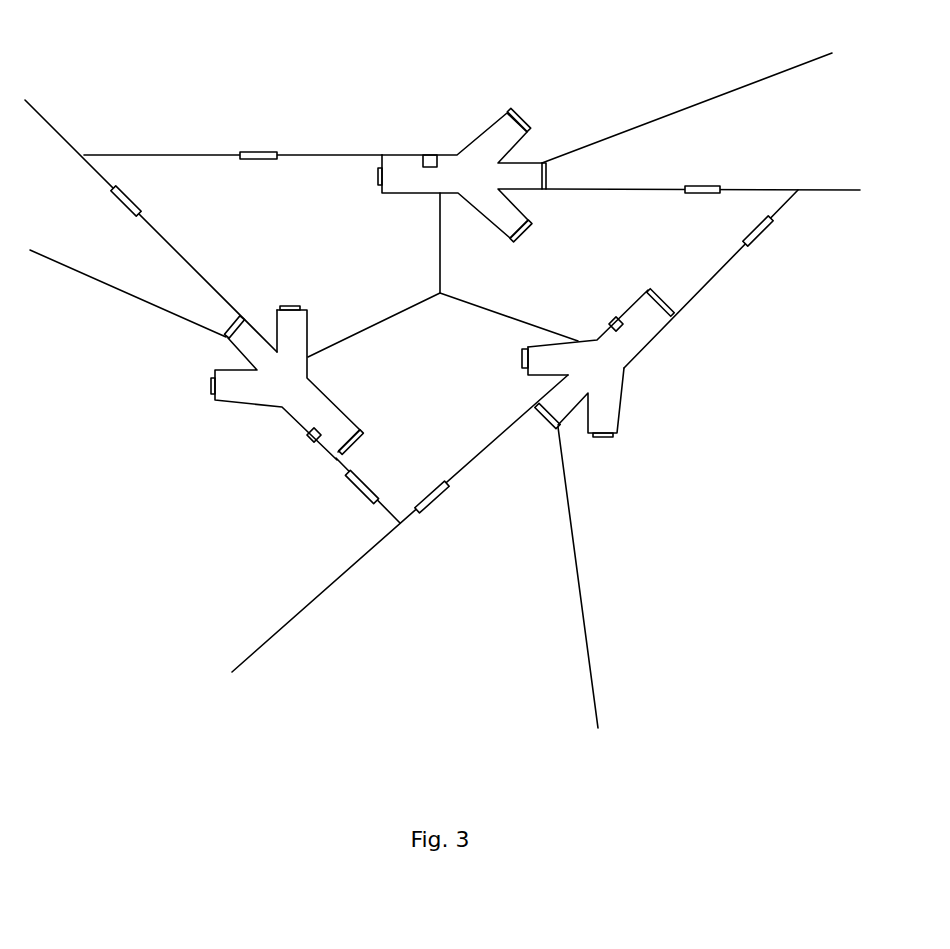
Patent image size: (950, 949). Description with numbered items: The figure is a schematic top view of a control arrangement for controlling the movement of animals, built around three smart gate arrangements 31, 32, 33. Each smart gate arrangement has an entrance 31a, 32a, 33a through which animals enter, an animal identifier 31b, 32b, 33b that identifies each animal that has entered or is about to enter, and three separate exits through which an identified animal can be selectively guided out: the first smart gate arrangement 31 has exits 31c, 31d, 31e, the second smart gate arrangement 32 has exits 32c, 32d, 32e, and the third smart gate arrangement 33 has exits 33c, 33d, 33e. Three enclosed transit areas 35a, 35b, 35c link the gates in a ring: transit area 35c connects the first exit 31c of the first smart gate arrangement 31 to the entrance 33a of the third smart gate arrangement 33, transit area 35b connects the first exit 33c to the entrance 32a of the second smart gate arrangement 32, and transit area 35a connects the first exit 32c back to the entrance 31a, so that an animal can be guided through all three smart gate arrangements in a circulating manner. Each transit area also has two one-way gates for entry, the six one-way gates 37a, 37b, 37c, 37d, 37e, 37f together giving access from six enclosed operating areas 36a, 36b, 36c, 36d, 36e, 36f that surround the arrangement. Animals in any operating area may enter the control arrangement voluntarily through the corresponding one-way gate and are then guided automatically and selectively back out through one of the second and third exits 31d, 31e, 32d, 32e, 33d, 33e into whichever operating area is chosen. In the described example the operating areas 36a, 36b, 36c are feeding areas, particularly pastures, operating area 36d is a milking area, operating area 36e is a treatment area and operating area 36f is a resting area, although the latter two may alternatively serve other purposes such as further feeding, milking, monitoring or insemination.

The smart gate arrangement 31 is at (328, 393).
The entrance 31a is at (377, 472).
The animal identifier 31b is at (312, 441).
The first exit 31c is at (288, 275).
The second exit 31d is at (233, 327).
The third exit 31e is at (210, 385).
The smart gate arrangement 32 is at (638, 357).
The entrance 32a is at (668, 294).
The animal identifier 32b is at (613, 320).
The first exit 32c is at (520, 359).
The second exit 32d is at (540, 410).
The third exit 32e is at (603, 471).
The smart gate arrangement 33 is at (398, 155).
The entrance 33a is at (374, 177).
The animal identifier 33b is at (428, 155).
The first exit 33c is at (540, 254).
The second exit 33d is at (553, 177).
The third exit 33e is at (520, 118).
The transit area 35a is at (436, 355).
The transit area 35b is at (603, 250).
The transit area 35c is at (250, 215).
The feeding area 36a is at (189, 540).
The feeding area 36b is at (730, 510).
The feeding area 36c is at (415, 22).
The milking area 36d is at (463, 617).
The treatment area 36e is at (792, 150).
The resting area 36f is at (122, 205).
The one-way gate 37a is at (373, 502).
The one-way gate 37b is at (767, 239).
The one-way gate 37c is at (258, 146).
The one-way gate 37d is at (437, 503).
The one-way gate 37e is at (702, 185).
The one-way gate 37f is at (118, 188).